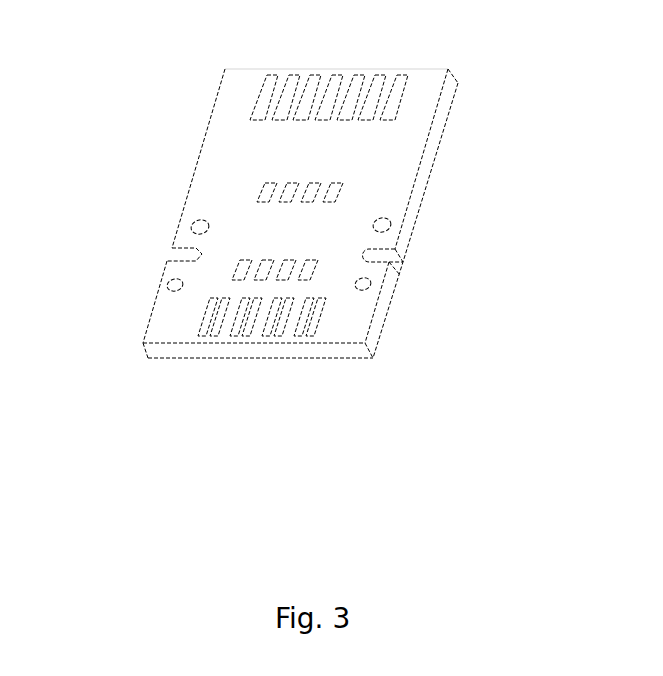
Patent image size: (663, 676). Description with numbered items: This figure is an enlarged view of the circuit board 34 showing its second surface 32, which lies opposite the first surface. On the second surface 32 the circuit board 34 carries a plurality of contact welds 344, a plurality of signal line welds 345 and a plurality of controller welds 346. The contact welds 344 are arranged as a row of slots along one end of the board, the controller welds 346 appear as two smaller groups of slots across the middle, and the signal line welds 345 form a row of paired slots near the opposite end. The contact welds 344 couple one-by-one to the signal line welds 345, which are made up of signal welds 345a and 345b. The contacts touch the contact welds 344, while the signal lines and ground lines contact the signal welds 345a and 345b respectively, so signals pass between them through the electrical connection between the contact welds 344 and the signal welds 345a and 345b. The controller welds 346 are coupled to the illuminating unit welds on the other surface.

The circuit board 34 is at (340, 28).
The second surface 32 is at (378, 180).
The contact welds 344 is at (403, 92).
The controller welds 346 is at (264, 193).
The signal line welds 345 is at (243, 390).
The signal welds 345a is at (262, 360).
The signal welds 345b is at (204, 315).